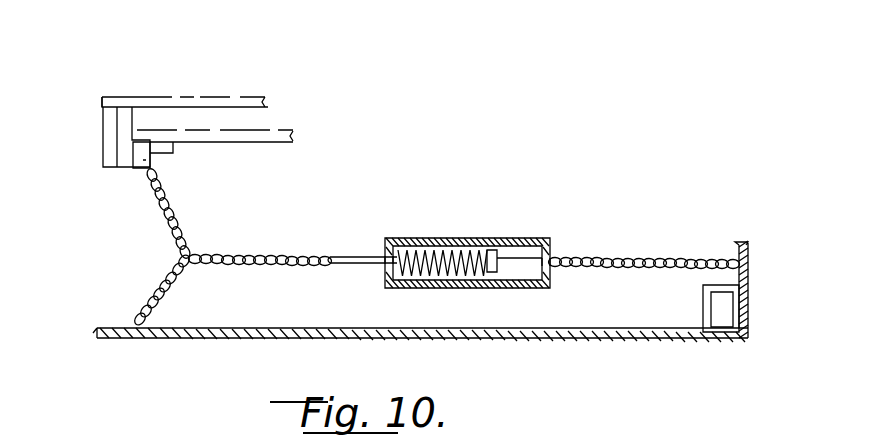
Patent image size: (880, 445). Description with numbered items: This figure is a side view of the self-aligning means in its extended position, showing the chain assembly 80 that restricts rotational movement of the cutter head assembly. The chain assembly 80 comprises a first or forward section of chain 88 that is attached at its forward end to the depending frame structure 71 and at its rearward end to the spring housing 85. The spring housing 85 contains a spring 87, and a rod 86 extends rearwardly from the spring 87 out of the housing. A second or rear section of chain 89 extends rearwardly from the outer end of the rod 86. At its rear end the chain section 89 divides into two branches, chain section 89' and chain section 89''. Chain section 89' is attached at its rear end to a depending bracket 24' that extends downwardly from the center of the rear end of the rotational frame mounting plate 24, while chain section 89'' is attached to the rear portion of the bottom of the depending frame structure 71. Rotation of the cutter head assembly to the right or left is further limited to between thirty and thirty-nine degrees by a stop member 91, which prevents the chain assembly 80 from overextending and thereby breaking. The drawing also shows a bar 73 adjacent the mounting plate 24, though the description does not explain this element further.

The rotational frame mounting plate 24 is at (217, 73).
The depending bracket 24' is at (81, 141).
The guide bar 73 is at (267, 130).
The stop member 91 is at (152, 142).
The second or rear section of chain 89 is at (259, 231).
The chain section 89' is at (196, 209).
The chain section 89'' is at (130, 290).
The chain assembly 80 is at (305, 245).
The rod 86 is at (350, 266).
The spring housing 85 is at (483, 240).
The spring 87 is at (447, 268).
The first or forward section of chain 88 is at (668, 257).
The depending frame structure 71 is at (630, 345).